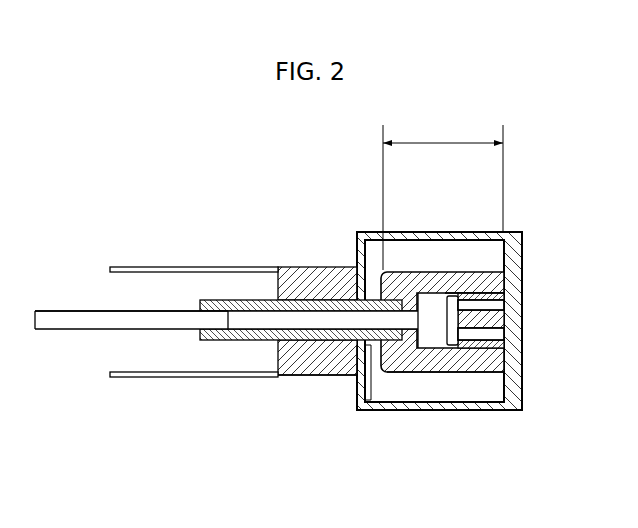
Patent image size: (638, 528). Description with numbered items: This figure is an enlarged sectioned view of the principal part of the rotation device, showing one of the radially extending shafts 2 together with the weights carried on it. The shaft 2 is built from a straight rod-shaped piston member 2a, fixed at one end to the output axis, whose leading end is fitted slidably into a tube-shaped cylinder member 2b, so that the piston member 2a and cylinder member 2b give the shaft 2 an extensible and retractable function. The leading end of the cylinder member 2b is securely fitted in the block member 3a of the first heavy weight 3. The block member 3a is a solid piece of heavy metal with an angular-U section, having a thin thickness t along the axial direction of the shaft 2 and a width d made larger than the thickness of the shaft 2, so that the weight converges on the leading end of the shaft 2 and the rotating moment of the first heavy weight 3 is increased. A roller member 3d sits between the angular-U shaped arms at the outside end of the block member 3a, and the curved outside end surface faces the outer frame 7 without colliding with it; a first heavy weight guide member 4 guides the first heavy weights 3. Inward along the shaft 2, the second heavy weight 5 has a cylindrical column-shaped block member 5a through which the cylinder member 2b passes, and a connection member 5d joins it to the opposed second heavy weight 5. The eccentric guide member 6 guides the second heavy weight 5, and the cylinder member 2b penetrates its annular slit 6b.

The shaft 2 is at (76, 337).
The piston member 2a is at (96, 311).
The cylinder member 2b is at (322, 273).
The first heavy weight 3 is at (434, 266).
The block member 3a is at (454, 373).
The roller member 3d is at (507, 303).
The first heavy weight guide member 4 is at (451, 292).
The second heavy weight 5 is at (265, 260).
The column-shaped block member 5a is at (341, 377).
The connection member 5d is at (212, 378).
The eccentric guide member 6 is at (371, 414).
The annular slit 6b is at (372, 354).
The outer frame 7 is at (523, 306).
The thickness t is at (400, 144).
The width d is at (356, 248).